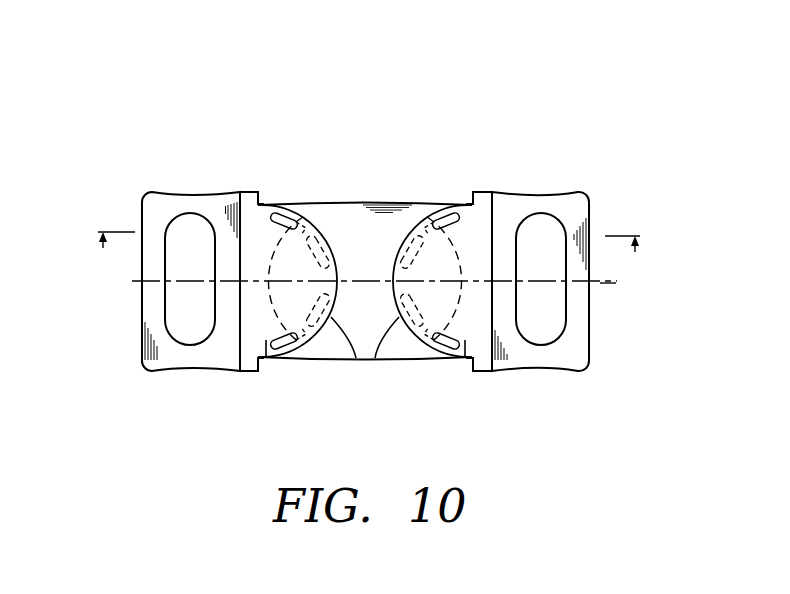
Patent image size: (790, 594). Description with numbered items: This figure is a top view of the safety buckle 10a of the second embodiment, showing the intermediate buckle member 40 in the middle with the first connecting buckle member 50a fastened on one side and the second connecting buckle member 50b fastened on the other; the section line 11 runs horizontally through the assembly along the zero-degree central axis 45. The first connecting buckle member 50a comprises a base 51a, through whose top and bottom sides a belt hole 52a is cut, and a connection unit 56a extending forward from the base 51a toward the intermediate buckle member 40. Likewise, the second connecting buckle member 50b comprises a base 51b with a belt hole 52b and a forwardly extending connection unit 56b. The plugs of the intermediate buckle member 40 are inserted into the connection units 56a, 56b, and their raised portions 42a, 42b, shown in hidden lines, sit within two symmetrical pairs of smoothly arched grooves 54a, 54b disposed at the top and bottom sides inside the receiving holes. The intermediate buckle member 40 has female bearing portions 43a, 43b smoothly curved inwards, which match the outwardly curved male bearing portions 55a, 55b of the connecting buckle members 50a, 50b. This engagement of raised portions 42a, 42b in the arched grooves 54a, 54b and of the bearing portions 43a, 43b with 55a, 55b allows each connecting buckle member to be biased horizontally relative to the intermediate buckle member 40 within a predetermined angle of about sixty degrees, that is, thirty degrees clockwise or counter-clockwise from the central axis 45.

The safety buckle 10a is at (384, 92).
The section line 11 is at (374, 276).
The intermediate buckle member 40 is at (349, 194).
The raised portions 42a is at (302, 213).
The raised portions 42b is at (418, 210).
The female bearing portion 43a is at (338, 215).
The female bearing portion 43b is at (382, 212).
The zero-degree central axis 45 is at (616, 284).
The first connecting buckle member 50a is at (191, 186).
The second connecting buckle member 50b is at (548, 186).
The base 51a is at (148, 213).
The base 51b is at (587, 216).
The belt hole 52a is at (190, 344).
The belt hole 52b is at (541, 343).
The smoothly arched grooves 54a is at (282, 210).
The smoothly arched grooves 54b is at (451, 210).
The male bearing portion 55a is at (356, 358).
The male bearing portion 55b is at (375, 358).
The connection unit 56a is at (266, 340).
The connection unit 56b is at (465, 340).